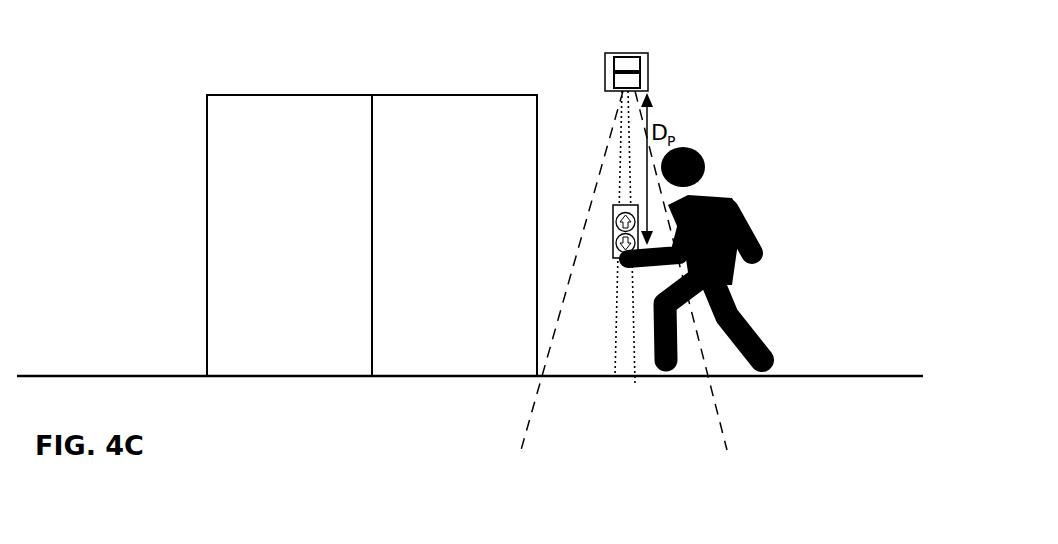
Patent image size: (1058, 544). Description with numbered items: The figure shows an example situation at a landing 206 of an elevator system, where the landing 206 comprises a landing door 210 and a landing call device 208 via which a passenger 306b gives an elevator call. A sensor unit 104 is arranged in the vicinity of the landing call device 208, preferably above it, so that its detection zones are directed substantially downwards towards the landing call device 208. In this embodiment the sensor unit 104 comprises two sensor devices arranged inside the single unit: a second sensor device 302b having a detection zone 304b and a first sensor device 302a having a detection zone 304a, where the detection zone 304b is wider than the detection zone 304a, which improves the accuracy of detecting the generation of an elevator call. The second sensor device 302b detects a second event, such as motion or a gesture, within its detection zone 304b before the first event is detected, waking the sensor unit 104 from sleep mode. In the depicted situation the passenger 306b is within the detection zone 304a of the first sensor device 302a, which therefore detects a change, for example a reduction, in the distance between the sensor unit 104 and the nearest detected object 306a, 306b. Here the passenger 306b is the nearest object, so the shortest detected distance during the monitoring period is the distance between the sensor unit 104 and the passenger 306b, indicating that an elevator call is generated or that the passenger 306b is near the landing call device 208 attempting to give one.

The landing 206 is at (92, 118).
The landing door 210 is at (207, 207).
The sensor unit 104 is at (606, 71).
The second sensor device 302b is at (640, 60).
The first sensor device 302a is at (638, 85).
The detection zone of the second sensor device 304b is at (573, 257).
The detection zone of the first sensor device 304a is at (612, 305).
The landing call device 208 is at (612, 230).
The nearest detected object 306a is at (620, 407).
The passenger 306b is at (750, 219).